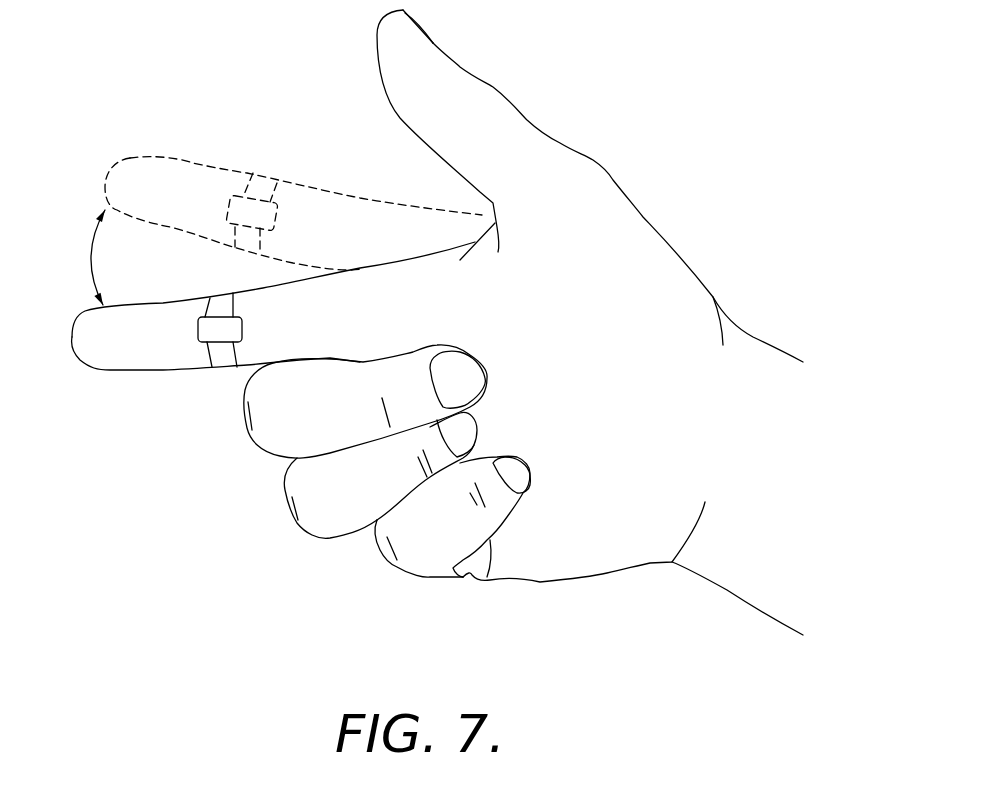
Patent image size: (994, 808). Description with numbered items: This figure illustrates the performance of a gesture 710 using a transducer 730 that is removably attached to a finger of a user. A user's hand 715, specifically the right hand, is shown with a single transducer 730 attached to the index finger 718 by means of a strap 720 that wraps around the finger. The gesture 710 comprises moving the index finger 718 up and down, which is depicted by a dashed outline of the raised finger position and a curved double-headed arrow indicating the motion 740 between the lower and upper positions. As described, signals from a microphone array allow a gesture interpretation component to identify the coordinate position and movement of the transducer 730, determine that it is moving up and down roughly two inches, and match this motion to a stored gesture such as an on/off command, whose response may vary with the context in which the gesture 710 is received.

The gesture 710 is at (523, 322).
The user's hand 715 is at (702, 293).
The index finger 718 is at (83, 350).
The strap 720 is at (225, 358).
The transducer 730 is at (197, 332).
The finger motion 740 is at (90, 254).